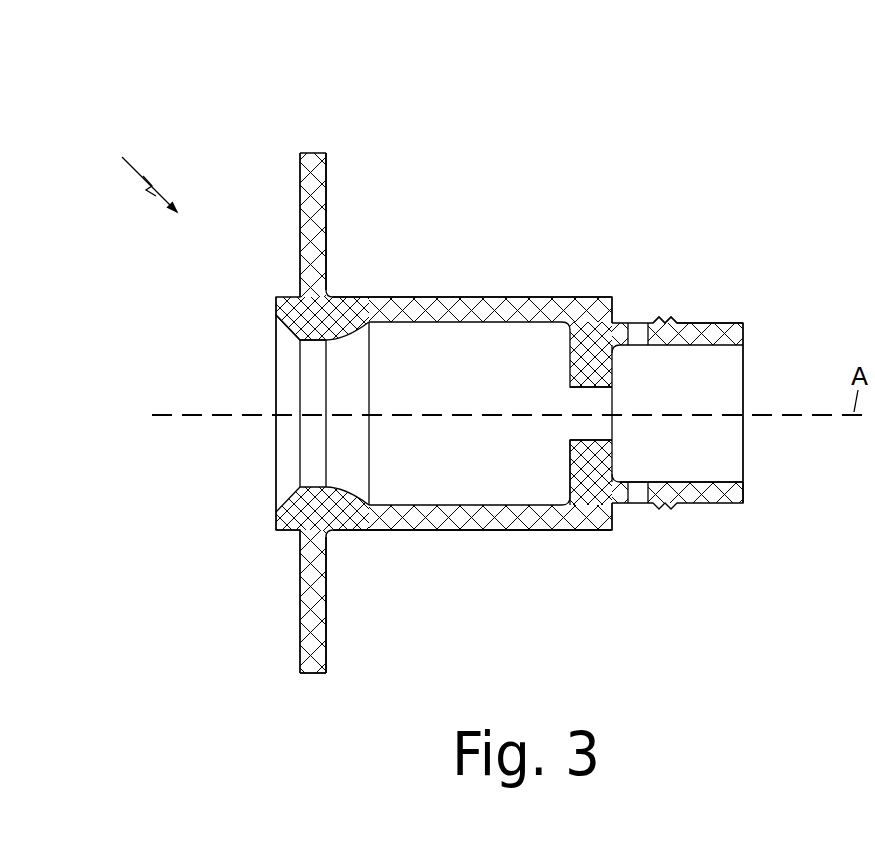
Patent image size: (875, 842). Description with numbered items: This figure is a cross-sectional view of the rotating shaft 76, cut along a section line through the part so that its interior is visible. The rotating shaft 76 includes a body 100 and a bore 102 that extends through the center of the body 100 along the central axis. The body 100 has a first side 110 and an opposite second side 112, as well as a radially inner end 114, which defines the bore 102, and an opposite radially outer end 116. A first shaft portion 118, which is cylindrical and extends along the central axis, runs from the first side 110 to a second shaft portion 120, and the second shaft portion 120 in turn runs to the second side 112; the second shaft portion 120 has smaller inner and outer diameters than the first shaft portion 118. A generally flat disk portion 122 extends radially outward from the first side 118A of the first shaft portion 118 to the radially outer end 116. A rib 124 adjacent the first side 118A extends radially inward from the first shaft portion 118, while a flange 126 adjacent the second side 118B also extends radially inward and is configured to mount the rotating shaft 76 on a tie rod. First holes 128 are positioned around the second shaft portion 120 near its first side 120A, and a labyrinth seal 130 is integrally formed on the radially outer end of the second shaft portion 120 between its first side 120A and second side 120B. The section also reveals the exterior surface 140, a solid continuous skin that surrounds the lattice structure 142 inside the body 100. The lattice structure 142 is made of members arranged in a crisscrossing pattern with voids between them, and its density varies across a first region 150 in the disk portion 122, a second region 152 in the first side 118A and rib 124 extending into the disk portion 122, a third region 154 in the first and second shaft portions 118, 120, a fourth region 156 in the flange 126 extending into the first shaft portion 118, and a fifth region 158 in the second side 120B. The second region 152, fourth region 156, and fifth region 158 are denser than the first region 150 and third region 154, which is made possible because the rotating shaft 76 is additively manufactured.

The rotating shaft 76 is at (132, 174).
The body 100 is at (461, 298).
The bore 102 is at (490, 474).
The first side 110 is at (270, 525).
The second side 112 is at (750, 490).
The radially inner end 114 is at (597, 394).
The radially outer end 116 is at (313, 150).
The first shaft portion 118 is at (520, 308).
The first side of first shaft portion 118A is at (276, 310).
The second side of first shaft portion 118B is at (611, 530).
The second shaft portion 120 is at (715, 318).
The first side of second shaft portion 120A is at (616, 504).
The second side of second shaft portion 120B is at (743, 325).
The disk portion 122 is at (326, 198).
The rib 124 is at (312, 340).
The flange 126 is at (600, 300).
The first holes 128 is at (643, 312).
The labyrinth seal 130 is at (672, 312).
The exterior surface 140 is at (300, 598).
The lattice structure 142 is at (318, 597).
The first region 150 is at (300, 648).
The second region 152 is at (290, 535).
The third region 154 is at (460, 531).
The fourth region 156 is at (593, 530).
The fifth region 158 is at (738, 505).